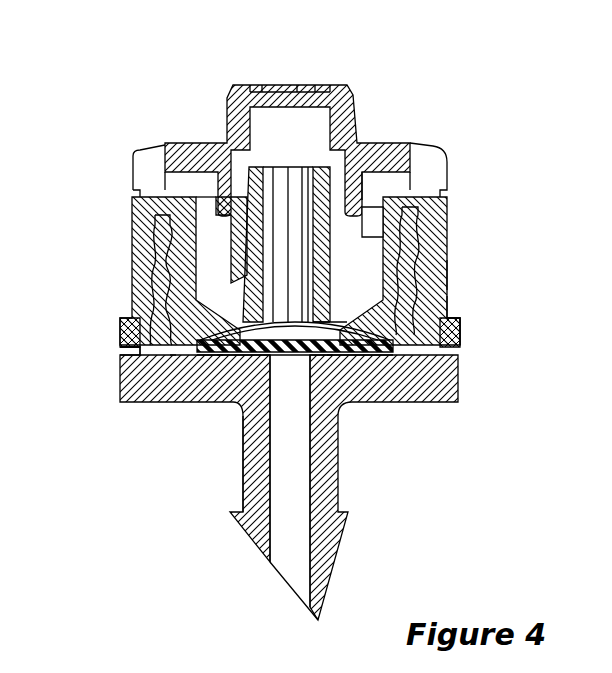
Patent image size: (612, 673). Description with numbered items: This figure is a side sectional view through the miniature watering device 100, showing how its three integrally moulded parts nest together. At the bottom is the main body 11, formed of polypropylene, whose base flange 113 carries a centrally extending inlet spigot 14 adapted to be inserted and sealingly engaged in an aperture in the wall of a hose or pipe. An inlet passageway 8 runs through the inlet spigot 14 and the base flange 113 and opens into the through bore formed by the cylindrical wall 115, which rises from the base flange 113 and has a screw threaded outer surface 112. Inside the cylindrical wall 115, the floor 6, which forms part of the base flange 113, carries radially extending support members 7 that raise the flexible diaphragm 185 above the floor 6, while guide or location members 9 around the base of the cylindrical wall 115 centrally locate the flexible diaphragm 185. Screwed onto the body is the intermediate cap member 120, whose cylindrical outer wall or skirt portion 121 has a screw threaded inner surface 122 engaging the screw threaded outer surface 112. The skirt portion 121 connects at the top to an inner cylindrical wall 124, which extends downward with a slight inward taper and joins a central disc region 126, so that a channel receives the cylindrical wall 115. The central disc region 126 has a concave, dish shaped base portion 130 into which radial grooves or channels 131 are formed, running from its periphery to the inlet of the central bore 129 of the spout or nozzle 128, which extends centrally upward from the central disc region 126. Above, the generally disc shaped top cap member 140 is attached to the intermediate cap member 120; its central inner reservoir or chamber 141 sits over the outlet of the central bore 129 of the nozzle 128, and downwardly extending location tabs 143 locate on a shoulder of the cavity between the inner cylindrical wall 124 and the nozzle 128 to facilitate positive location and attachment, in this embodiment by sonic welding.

The miniature watering device 100 is at (410, 100).
The central inner reservoir or chamber 141 is at (259, 90).
The central bore 129 is at (291, 210).
The top cap member 140 is at (136, 150).
The spout or nozzle 128 is at (251, 187).
The location tabs 143 is at (368, 218).
The intermediate cap member 120 is at (455, 232).
The screw threaded inner surface 122 is at (440, 248).
The screw threaded outer surface 112 is at (440, 280).
The cylindrical outer wall or skirt portion 121 is at (440, 312).
The central disc region 126 is at (440, 343).
The guide or location members 9 is at (380, 323).
The base portion 130 is at (445, 380).
The flexible diaphragm 185 is at (345, 352).
The cylindrical wall 115 is at (163, 243).
The inner cylindrical wall 124 is at (203, 265).
The radial grooves or channels 131 is at (178, 315).
The base flange 113 is at (127, 353).
The main body 11 is at (121, 383).
The floor 6 is at (173, 357).
The support members 7 is at (220, 357).
The inlet spigot 14 is at (243, 478).
The inlet passageway 8 is at (297, 480).